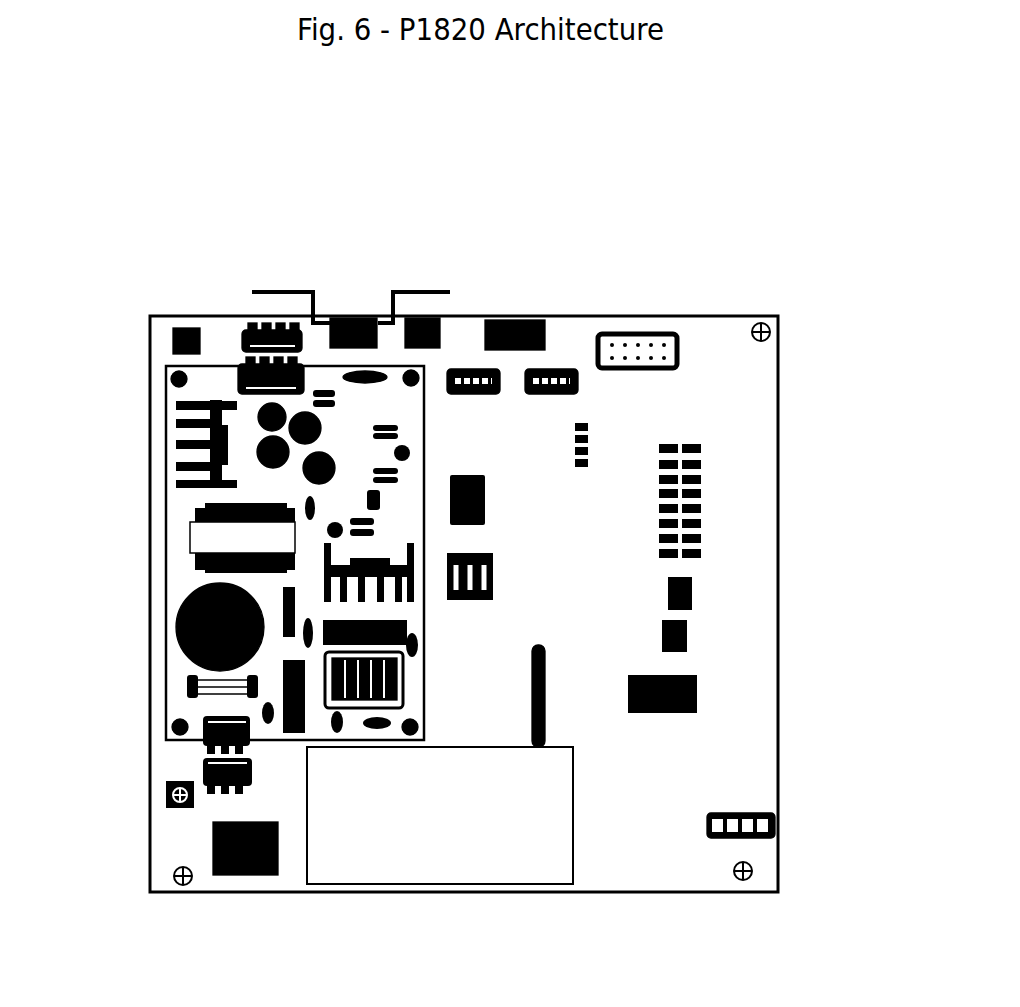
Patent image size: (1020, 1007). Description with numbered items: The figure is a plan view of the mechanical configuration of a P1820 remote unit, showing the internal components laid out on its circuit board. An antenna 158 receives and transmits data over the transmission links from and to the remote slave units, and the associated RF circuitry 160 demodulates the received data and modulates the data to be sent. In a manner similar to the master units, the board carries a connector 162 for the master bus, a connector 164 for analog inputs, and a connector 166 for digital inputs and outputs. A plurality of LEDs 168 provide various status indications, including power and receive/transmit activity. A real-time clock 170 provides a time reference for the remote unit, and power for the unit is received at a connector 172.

The antenna 158 is at (562, 686).
The RF circuitry 160 is at (487, 850).
The connector 162 is at (780, 829).
The connector 164 is at (561, 360).
The connector 166 is at (463, 360).
The LEDs 168 is at (612, 444).
The real-time clock 170 is at (160, 340).
The connector 172 is at (202, 847).